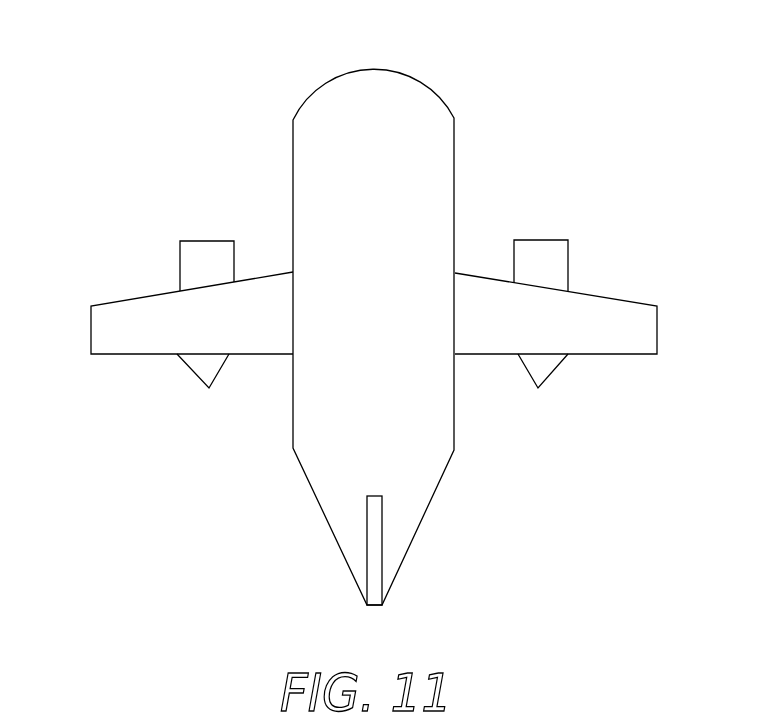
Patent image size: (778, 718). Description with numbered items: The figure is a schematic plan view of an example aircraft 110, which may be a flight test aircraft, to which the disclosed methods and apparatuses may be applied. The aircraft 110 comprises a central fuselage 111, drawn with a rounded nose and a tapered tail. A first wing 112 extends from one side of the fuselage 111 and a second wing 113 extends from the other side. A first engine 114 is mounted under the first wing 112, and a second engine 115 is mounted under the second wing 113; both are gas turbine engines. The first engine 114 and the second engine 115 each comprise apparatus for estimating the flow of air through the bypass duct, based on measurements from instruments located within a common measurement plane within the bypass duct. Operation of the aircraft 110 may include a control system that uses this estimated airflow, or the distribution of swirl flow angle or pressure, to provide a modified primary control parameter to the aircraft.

The aircraft 110 is at (445, 66).
The fuselage 111 is at (445, 147).
The first wing 112 is at (97, 327).
The second wing 113 is at (648, 324).
The first engine 114 is at (204, 245).
The second engine 115 is at (542, 247).